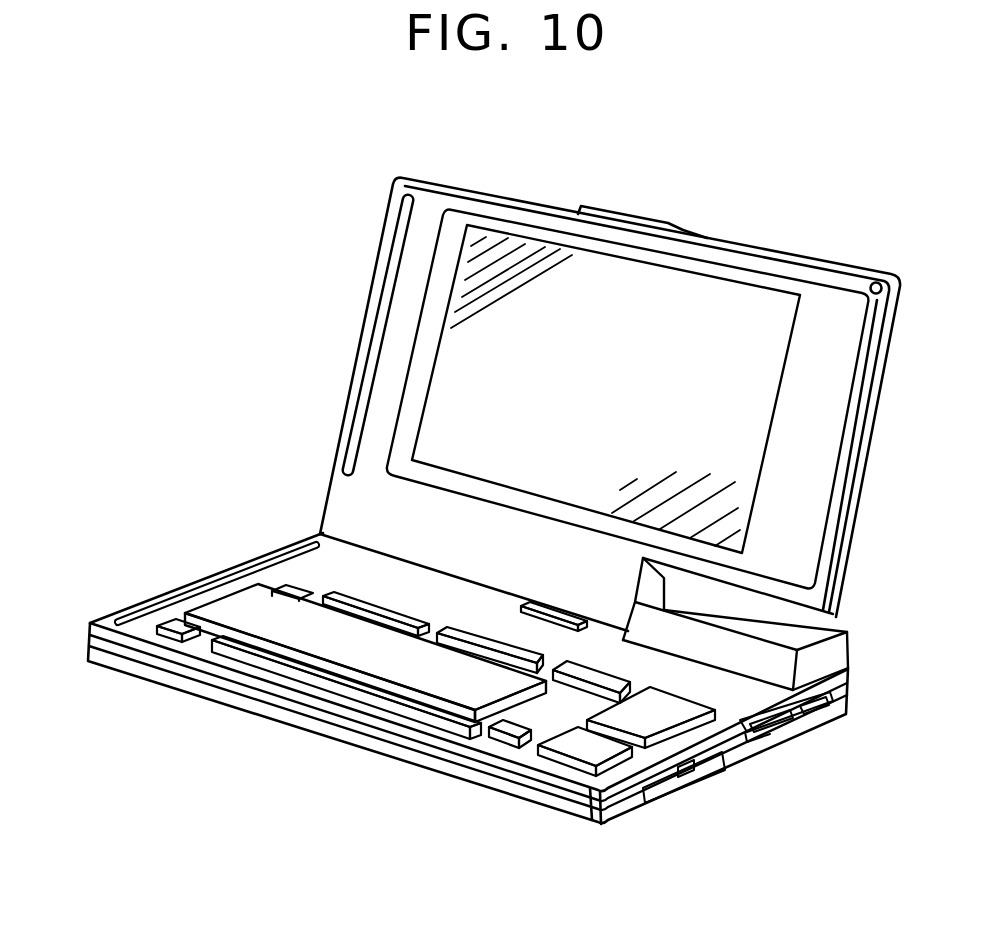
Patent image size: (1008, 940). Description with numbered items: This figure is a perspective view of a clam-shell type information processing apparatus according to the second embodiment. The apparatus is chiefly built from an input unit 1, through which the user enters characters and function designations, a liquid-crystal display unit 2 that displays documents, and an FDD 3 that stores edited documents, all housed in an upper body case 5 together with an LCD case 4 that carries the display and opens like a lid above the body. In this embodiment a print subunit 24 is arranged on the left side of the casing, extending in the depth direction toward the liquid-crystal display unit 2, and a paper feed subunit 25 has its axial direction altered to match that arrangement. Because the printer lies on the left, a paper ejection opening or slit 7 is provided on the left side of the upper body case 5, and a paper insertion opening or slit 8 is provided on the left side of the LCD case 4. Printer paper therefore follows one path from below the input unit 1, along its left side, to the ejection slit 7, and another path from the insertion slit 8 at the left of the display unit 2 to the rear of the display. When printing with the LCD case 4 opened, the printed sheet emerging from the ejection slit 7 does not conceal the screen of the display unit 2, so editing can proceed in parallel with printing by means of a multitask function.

The input unit 1 is at (328, 641).
The liquid-crystal display unit 2 is at (742, 307).
The FDD (flexible disk drive) 3 is at (793, 740).
The LCD case 4 is at (394, 178).
The upper body case 5 is at (105, 620).
The paper ejection opening or slit 7 is at (226, 578).
The paper insertion opening or slit 8 is at (383, 307).
The print subunit 24 is at (110, 642).
The paper feed subunit 25 is at (147, 665).